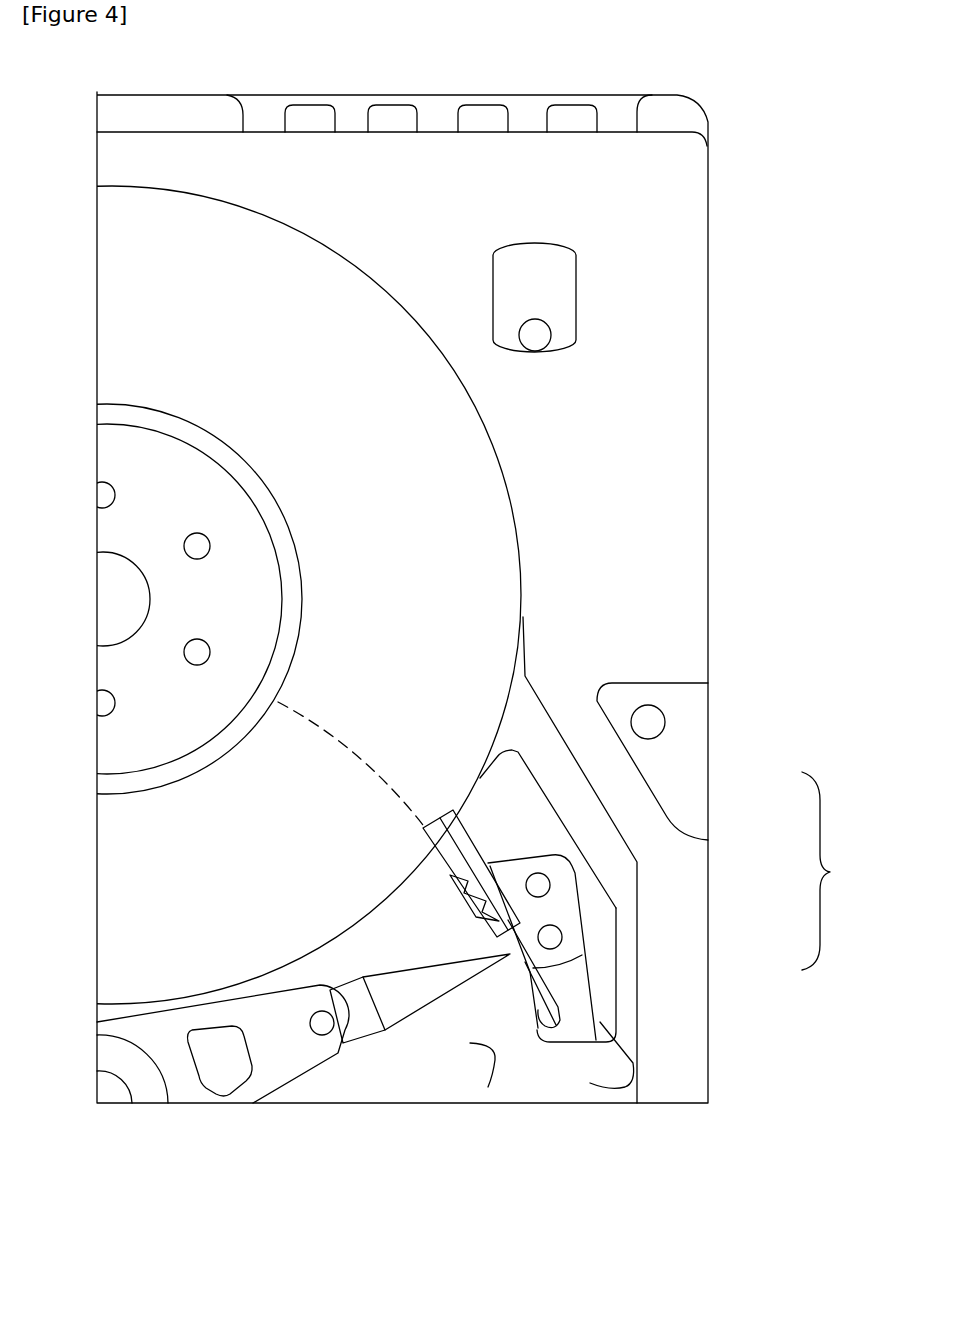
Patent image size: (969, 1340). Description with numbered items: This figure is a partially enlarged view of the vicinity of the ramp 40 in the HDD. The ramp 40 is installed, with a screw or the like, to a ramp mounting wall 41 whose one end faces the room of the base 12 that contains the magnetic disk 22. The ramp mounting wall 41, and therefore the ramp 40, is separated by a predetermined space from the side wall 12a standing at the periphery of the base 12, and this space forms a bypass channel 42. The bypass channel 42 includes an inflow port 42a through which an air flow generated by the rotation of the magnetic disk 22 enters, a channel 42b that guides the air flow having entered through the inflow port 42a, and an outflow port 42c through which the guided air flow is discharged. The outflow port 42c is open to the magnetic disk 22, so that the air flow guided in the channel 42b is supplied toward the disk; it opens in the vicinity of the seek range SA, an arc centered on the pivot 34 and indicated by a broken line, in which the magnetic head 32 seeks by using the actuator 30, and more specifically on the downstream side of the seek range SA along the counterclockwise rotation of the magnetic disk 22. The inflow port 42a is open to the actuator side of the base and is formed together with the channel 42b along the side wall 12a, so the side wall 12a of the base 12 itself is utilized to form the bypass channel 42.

The base 12 is at (720, 240).
The side wall 12a is at (655, 548).
The magnetic disk 22 is at (470, 483).
The seek range SA is at (332, 740).
The actuator 30 is at (237, 1100).
The magnetic head 32 is at (508, 962).
The pivot 34 is at (112, 1085).
The ramp 40 is at (542, 1003).
The ramp mounting wall 41 is at (590, 1084).
The bypass channel 42 is at (732, 826).
The inflow port 42a is at (623, 1037).
The channel 42b is at (617, 879).
The outflow port 42c is at (530, 737).